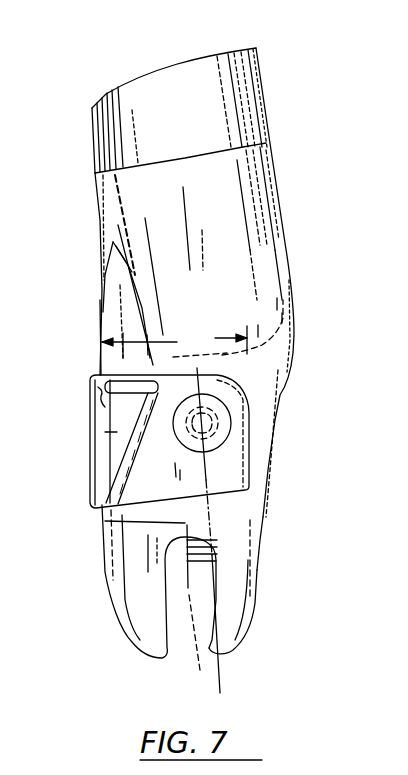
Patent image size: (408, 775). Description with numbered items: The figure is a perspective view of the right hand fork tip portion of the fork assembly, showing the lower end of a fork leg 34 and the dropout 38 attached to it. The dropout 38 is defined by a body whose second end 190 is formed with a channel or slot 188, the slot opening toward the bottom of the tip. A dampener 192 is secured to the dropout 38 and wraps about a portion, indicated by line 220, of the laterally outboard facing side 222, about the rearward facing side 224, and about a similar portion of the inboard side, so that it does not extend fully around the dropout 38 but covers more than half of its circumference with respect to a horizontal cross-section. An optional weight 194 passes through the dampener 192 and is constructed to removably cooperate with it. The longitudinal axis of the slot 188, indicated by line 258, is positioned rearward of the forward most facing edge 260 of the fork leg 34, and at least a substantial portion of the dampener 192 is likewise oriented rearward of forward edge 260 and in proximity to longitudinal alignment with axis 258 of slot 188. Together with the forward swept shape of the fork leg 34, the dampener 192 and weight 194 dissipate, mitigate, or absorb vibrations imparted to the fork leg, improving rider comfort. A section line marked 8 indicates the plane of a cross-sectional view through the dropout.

The fork leg 34 is at (240, 73).
The slot 188 is at (263, 143).
The dropout 38 is at (257, 253).
The laterally outboard facing side 222 is at (233, 303).
The forward most facing edge 260 is at (280, 318).
The portion 220 is at (174, 342).
The rearward facing side 224 is at (100, 323).
The weight 194 is at (220, 420).
The dampener 192 is at (238, 477).
The longitudinal axis of slot 258 is at (185, 523).
The second end 190 is at (162, 652).
The section line 8- 8 is at (223, 197).